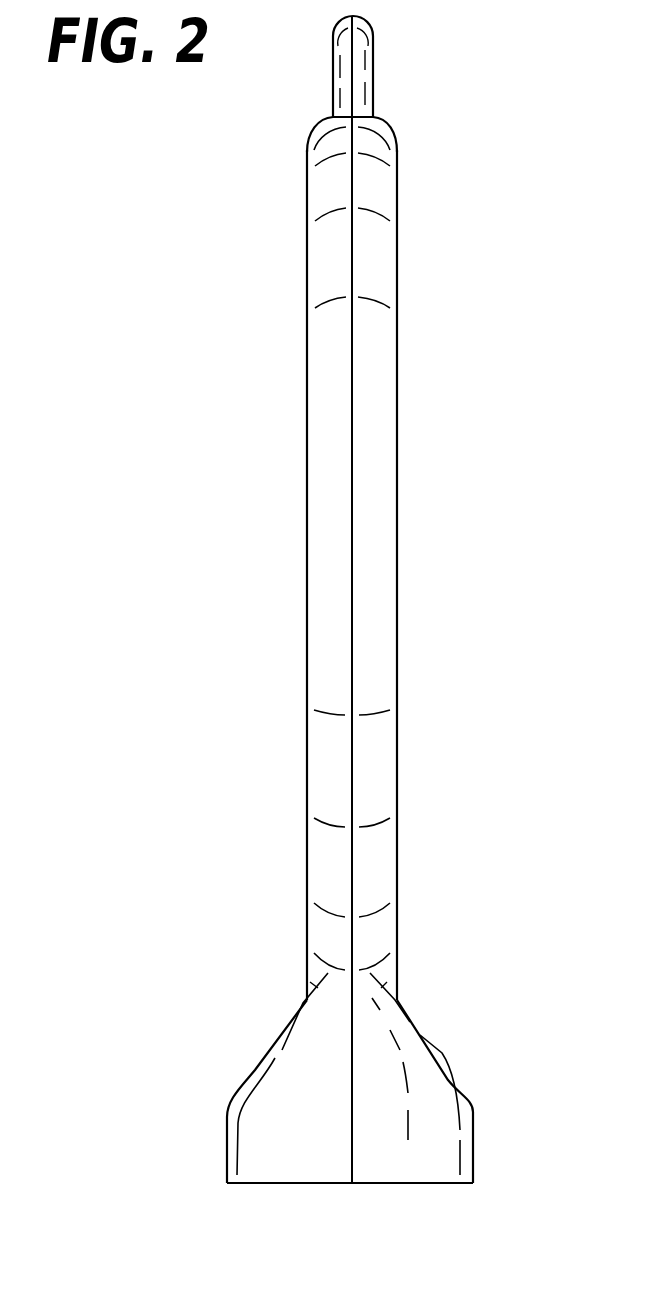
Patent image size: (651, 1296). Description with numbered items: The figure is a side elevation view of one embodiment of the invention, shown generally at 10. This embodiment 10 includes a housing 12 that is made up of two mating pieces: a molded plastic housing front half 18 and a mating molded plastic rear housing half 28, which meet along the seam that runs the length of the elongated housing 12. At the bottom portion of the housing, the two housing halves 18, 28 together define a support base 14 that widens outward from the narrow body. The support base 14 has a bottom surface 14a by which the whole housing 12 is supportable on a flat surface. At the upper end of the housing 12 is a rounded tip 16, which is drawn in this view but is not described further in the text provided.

The embodiment of the invention 10 is at (492, 232).
The housing 12 is at (404, 387).
The support base 14 is at (423, 1028).
The bottom surface 14a is at (292, 1184).
The insertion tip 16 is at (375, 78).
The housing front half 18 is at (307, 538).
The rear housing half 28 is at (398, 500).